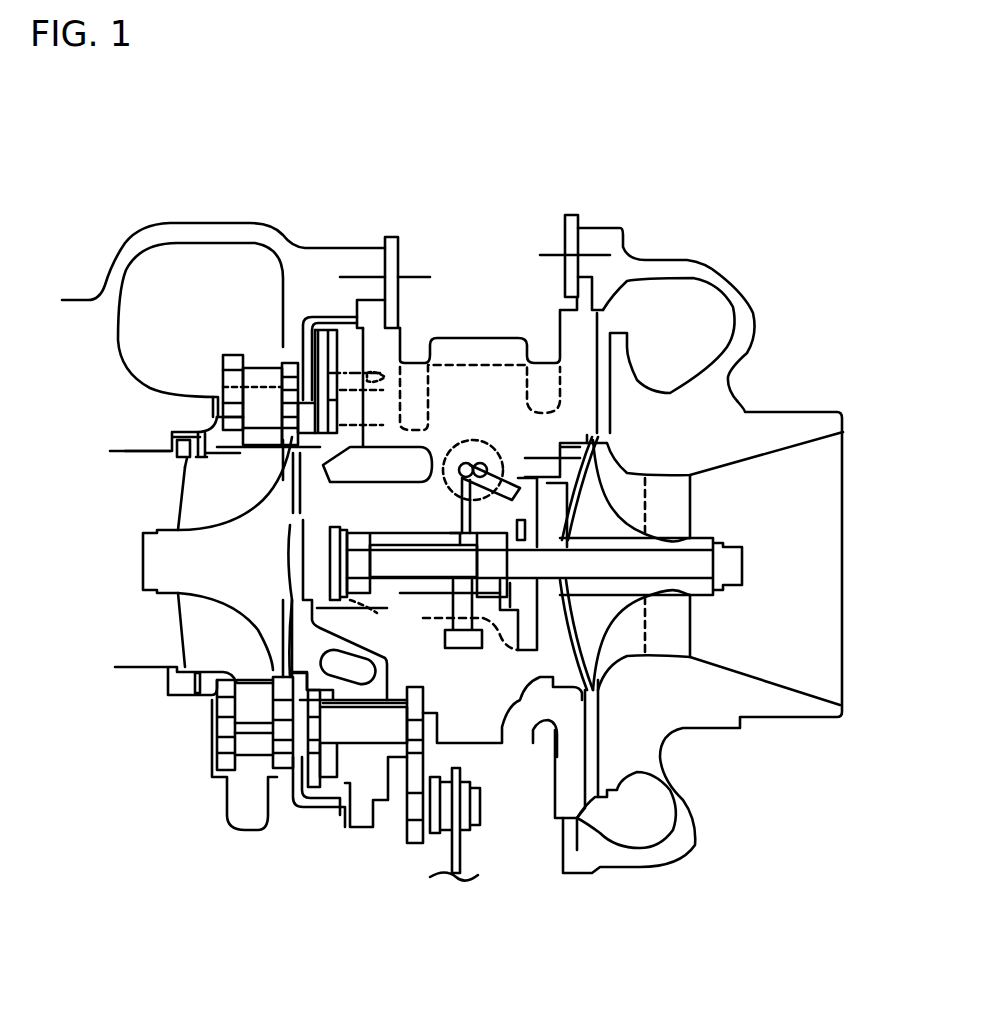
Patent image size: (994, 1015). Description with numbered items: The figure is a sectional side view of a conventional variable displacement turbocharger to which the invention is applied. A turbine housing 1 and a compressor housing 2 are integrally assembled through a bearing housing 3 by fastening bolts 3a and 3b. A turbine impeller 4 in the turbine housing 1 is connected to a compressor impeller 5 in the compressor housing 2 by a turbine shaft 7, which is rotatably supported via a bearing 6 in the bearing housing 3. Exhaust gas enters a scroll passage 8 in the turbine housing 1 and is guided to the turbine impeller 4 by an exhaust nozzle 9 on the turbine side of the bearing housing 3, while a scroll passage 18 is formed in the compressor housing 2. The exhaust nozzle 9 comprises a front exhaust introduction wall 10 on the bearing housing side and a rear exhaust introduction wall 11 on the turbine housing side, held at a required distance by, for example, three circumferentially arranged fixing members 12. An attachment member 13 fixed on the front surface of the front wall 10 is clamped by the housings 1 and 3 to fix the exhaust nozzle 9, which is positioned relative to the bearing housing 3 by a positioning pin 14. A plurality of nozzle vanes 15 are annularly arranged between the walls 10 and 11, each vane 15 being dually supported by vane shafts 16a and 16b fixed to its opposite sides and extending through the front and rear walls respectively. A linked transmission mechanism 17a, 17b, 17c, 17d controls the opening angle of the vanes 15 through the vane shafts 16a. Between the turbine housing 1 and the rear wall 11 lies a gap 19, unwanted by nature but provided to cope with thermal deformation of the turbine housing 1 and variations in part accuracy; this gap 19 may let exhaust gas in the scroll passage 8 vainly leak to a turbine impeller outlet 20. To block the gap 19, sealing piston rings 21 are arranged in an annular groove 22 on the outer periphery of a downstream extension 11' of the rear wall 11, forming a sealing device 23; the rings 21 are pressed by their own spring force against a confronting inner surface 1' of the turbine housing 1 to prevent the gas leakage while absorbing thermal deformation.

The turbine housing 1 is at (246, 397).
The inner surface 1' is at (163, 425).
The compressor housing 2 is at (727, 252).
The bearing housing 3 is at (473, 325).
The fastening bolt 3a is at (410, 278).
The fastening bolt 3b is at (548, 255).
The turbine impeller 4 is at (203, 618).
The compressor impeller 5 is at (677, 515).
The bearing 6 is at (408, 590).
The turbine shaft 7 is at (600, 568).
The scroll passage 8 is at (172, 293).
The exhaust nozzle 9 is at (212, 355).
The front exhaust introduction wall 10 is at (284, 360).
The rear exhaust introduction wall 11 is at (219, 353).
The downstream extension 11' is at (160, 468).
The fixing member 12 is at (294, 375).
The attachment member 13 is at (336, 345).
The positioning pin 14 is at (370, 377).
The nozzle vane 15 is at (255, 377).
The vane shaft 16a is at (282, 417).
The vane shaft 16b is at (232, 418).
The linked transmission mechanism 17a is at (462, 845).
The linked transmission mechanism 17b is at (424, 693).
The linked transmission mechanism 17c is at (373, 735).
The linked transmission mechanism 17d is at (300, 805).
The scroll passage 18 is at (688, 320).
The gap 19 is at (223, 400).
The turbine impeller outlet 20 is at (112, 527).
The sealing piston ring 21 is at (191, 458).
The annular groove 22 is at (207, 457).
The sealing device 23 is at (160, 455).